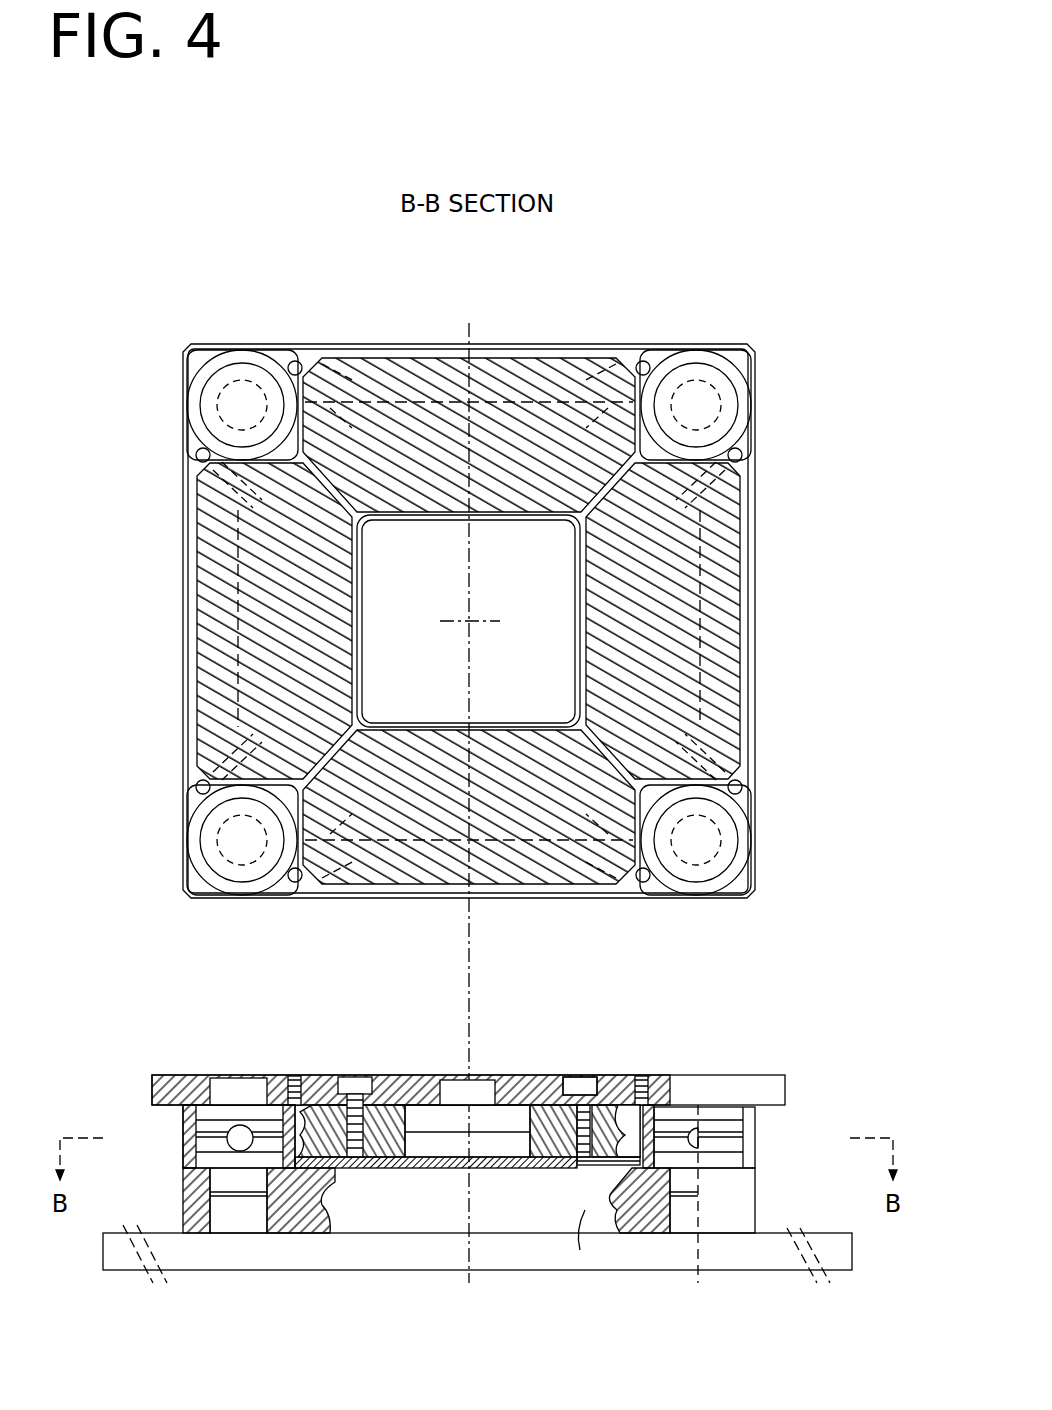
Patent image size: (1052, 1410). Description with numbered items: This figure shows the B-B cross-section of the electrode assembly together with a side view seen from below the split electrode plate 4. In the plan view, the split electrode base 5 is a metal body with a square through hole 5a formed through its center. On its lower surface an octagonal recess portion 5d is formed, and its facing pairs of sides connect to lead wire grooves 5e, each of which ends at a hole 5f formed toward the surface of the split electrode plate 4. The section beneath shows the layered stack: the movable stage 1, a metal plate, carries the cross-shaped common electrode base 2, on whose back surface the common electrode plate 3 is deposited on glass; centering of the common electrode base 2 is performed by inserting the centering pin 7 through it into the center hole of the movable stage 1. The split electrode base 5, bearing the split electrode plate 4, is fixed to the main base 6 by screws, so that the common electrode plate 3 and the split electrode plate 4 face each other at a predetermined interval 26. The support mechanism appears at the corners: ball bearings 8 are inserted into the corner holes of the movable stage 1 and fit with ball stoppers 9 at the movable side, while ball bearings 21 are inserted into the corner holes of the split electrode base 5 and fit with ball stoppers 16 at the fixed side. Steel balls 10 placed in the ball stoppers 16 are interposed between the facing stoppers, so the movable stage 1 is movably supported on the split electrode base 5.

The movable stage 1 is at (772, 1075).
The common electrode base 2 is at (565, 1078).
The common electrode plate 3 is at (385, 1118).
The split electrode plate 4 is at (730, 565).
The split electrode base 5 is at (718, 1220).
The square through hole 5a is at (555, 665).
The octagonal recess portion 5d is at (490, 395).
The lead wire grooves 5e is at (355, 358).
The hole 5f is at (295, 360).
The main base 6 is at (770, 1265).
The centering pin 7 is at (480, 1118).
The ball bearings 8 is at (205, 1115).
The ball stoppers at the movable side 9 is at (750, 1122).
The steel balls 10 is at (240, 1125).
The ball stoppers at the fixed side 16 is at (750, 1155).
The ball bearings 21 is at (220, 1170).
The predetermined interval 26 is at (430, 1165).